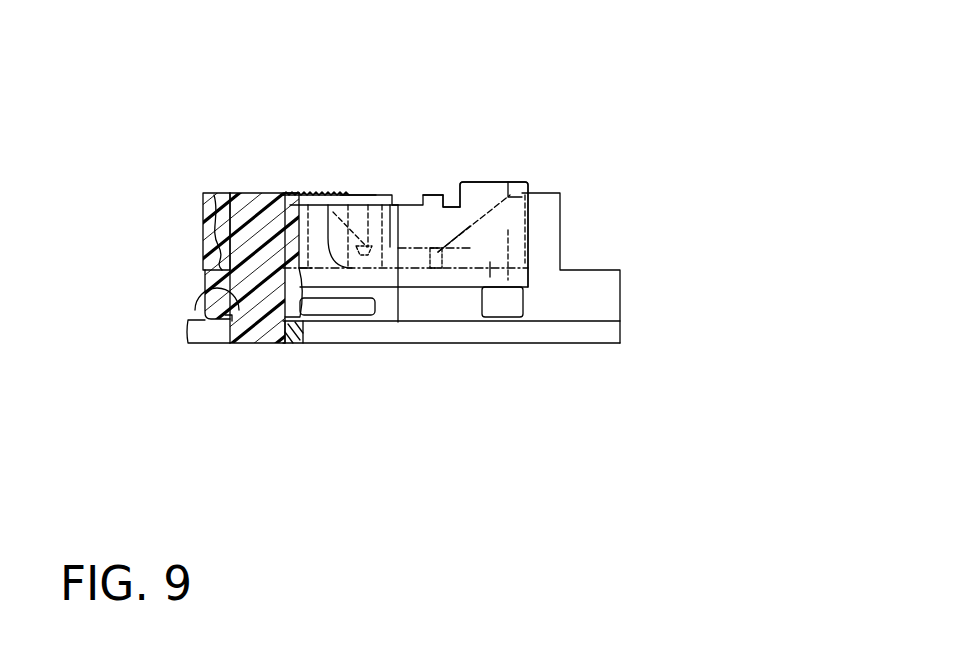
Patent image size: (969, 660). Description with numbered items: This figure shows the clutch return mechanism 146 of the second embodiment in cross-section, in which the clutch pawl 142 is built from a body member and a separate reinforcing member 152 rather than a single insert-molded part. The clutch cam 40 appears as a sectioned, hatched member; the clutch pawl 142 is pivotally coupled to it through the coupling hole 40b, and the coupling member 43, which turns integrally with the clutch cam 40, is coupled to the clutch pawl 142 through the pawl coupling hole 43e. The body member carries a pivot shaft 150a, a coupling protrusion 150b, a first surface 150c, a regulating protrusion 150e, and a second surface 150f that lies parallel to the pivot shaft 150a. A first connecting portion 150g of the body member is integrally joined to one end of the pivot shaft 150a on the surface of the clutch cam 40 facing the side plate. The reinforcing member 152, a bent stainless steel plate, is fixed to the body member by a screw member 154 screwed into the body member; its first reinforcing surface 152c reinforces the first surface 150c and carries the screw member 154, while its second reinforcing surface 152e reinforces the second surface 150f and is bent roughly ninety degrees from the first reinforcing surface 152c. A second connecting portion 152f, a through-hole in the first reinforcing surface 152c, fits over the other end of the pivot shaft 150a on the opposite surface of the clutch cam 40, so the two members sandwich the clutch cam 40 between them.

The clutch cam 40 is at (296, 185).
The coupling hole 40b is at (212, 267).
The coupling member 43 is at (393, 348).
The pawl coupling hole 43e is at (210, 287).
The clutch pawl 142 is at (413, 187).
The clutch return mechanism 146 is at (586, 172).
The pivot shaft 150a is at (237, 192).
The coupling protrusion 150b is at (250, 338).
The first surface 150c is at (455, 197).
The regulating protrusion 150e is at (510, 303).
The second surface 150f is at (385, 287).
The first connecting portion 150g is at (207, 272).
The reinforcing member 152 is at (538, 234).
The first reinforcing surface 152c is at (425, 193).
The second reinforcing surface 152e is at (470, 255).
The second connecting portion 152f is at (257, 190).
The screw member 154 is at (358, 190).